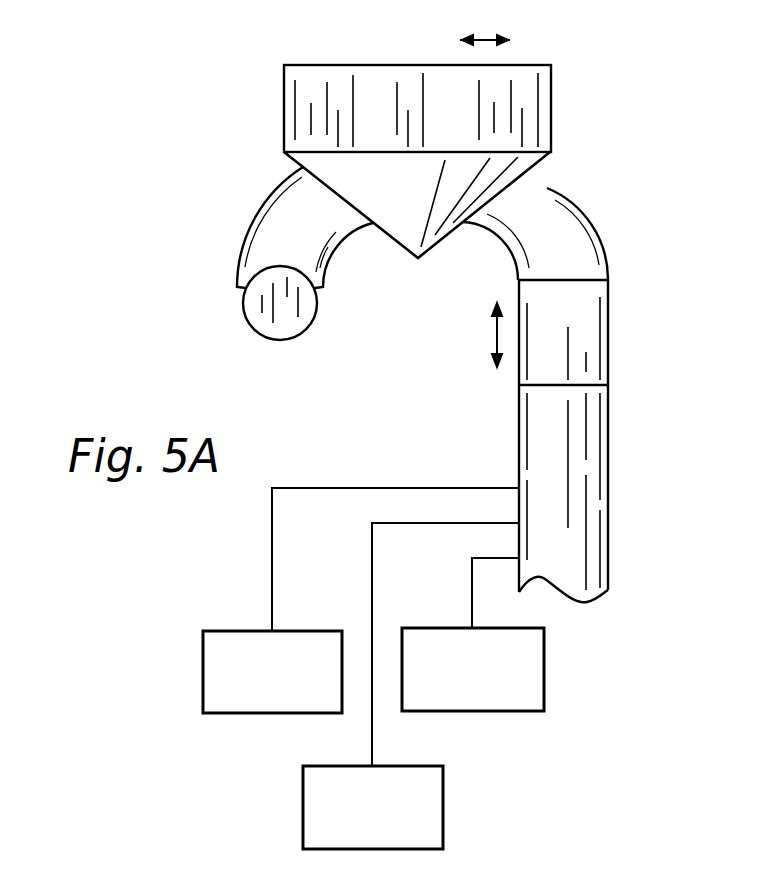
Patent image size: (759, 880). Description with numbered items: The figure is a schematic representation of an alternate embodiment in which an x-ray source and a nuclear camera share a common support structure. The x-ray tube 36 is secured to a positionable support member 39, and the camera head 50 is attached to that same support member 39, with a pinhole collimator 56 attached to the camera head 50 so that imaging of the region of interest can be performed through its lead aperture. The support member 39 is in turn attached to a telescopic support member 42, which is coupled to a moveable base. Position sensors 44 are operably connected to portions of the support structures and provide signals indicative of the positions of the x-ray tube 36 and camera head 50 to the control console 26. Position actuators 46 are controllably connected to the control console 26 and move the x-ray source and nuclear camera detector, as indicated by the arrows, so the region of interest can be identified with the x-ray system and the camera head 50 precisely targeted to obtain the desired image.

The control console 26 is at (443, 806).
The x-ray tube 36 is at (295, 322).
The positionable support member 39 is at (250, 222).
The telescopic support member 42 is at (600, 489).
The position sensors 44 is at (203, 676).
The position actuators 46 is at (544, 676).
The camera head 50 is at (284, 108).
The pinhole collimator 56 is at (477, 185).